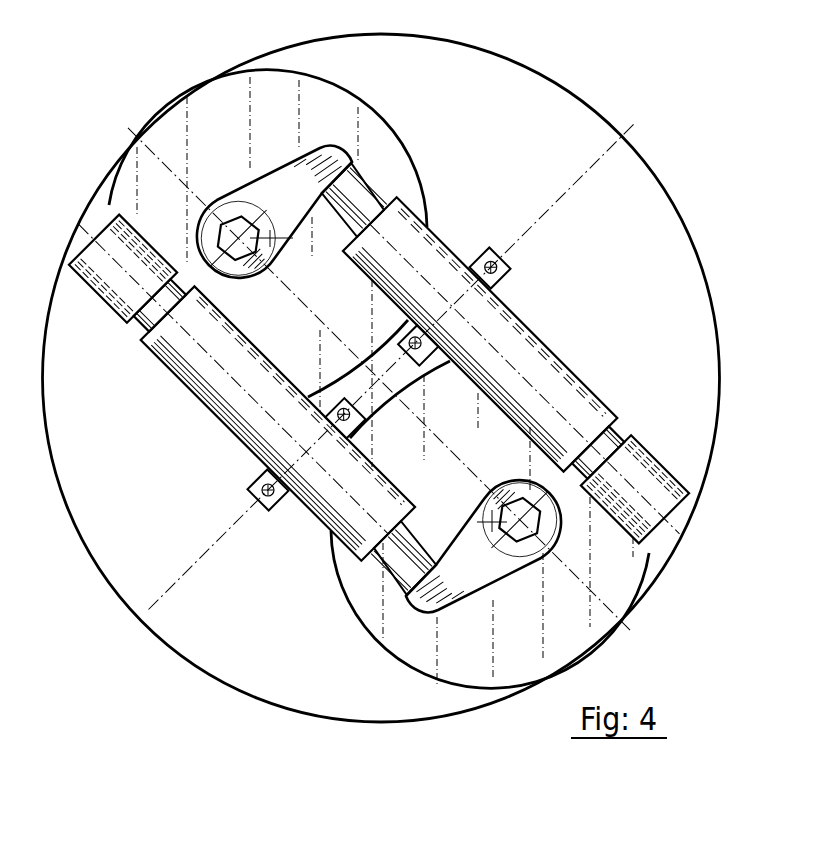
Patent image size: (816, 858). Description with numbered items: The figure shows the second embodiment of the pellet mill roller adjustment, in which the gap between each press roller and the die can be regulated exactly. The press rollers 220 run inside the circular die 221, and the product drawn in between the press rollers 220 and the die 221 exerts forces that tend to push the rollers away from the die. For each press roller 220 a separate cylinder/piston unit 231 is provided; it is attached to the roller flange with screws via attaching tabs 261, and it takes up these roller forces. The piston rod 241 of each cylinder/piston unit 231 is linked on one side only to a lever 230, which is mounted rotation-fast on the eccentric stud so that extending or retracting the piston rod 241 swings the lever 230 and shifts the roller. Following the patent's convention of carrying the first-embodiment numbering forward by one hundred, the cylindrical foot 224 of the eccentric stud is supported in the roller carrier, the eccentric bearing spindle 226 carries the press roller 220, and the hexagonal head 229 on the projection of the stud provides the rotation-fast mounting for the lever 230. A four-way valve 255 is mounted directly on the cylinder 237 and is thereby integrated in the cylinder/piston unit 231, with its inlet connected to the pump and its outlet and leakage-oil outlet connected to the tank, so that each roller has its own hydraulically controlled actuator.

The press roller 220 is at (352, 603).
The die 221 is at (557, 90).
The hexagon bolt 224 is at (228, 203).
The lug 226 is at (273, 247).
The hexagon bolt 229 is at (544, 521).
The lever 230 is at (497, 584).
The cylinder/piston unit 231 is at (566, 343).
The cylinder 237 is at (597, 390).
The piston rod 241 is at (358, 190).
The four-way valve 255 is at (653, 457).
The attaching tabs 261 is at (499, 259).